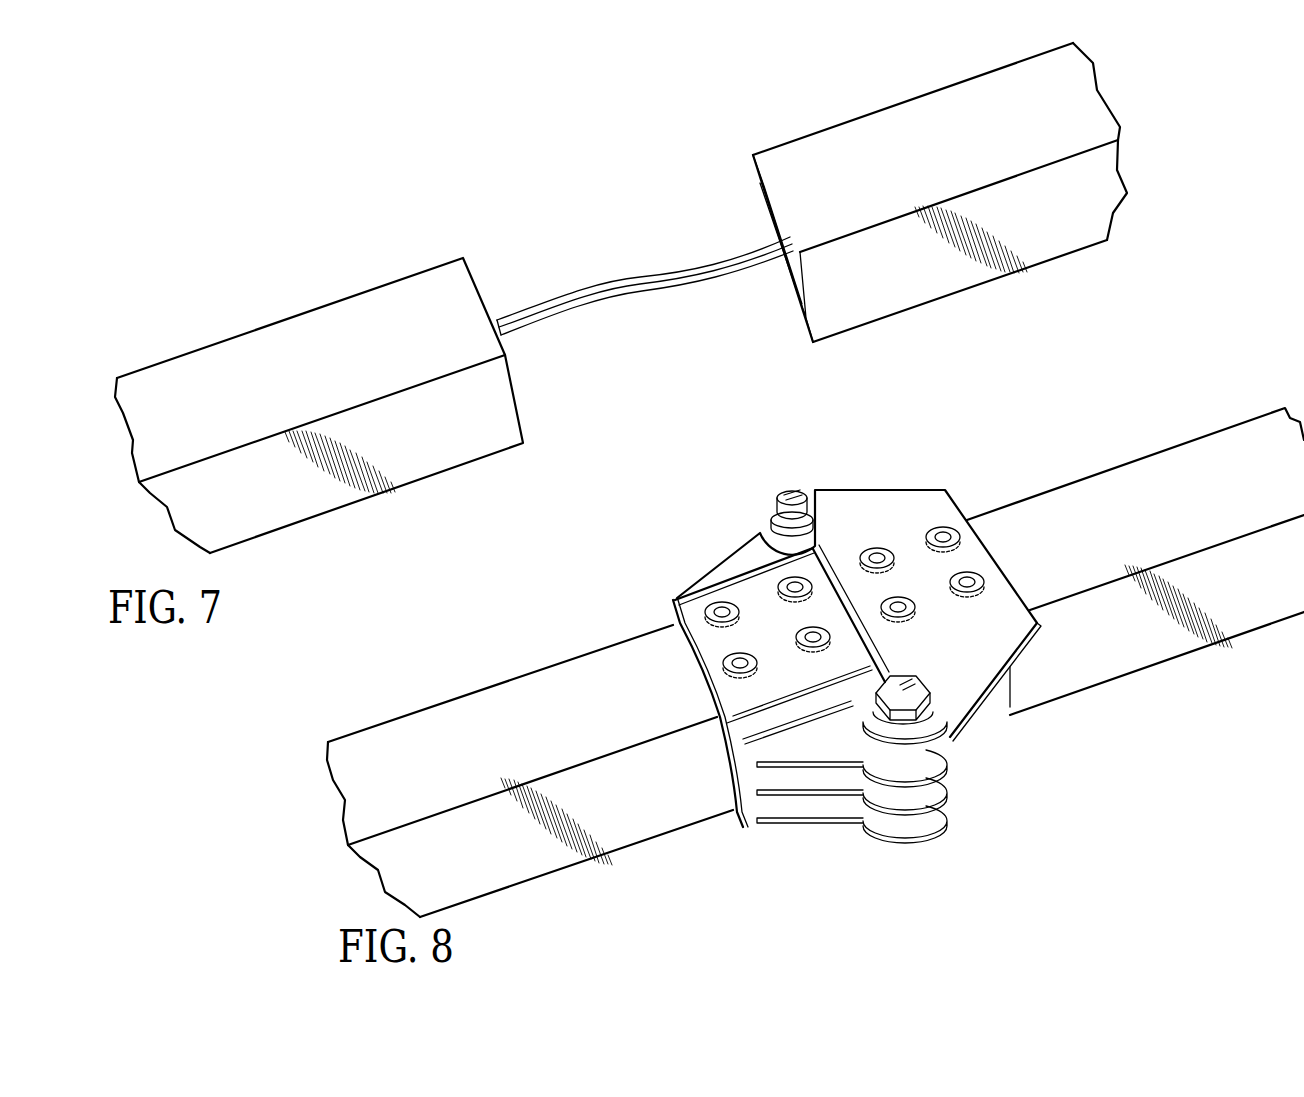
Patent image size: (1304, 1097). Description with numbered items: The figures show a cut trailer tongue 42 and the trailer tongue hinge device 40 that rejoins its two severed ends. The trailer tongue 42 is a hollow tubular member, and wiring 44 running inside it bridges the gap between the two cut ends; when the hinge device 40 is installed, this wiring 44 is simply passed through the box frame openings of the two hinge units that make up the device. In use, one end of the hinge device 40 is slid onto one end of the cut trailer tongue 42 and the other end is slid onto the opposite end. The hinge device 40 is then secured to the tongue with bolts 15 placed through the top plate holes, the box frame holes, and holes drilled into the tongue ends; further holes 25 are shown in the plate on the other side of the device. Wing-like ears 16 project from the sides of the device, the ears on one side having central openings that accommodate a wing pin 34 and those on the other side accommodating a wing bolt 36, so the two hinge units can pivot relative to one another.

In FIG. 7, the trailer tongue 42 is at (277, 350).
In FIG. 8, the trailer tongue 42 is at (482, 707).
In FIG. 7, the wiring 44 is at (627, 288).
In FIG. 8, the trailer tongue hinge device 40 is at (836, 653).
In FIG. 8, the wing-like ears 16 is at (767, 528).
In FIG. 8, the bolts 15 is at (875, 550).
In FIG. 8, the hole 25 is at (780, 590).
In FIG. 8, the wing pin 34 is at (790, 497).
In FIG. 8, the wing bolt 36 is at (917, 700).